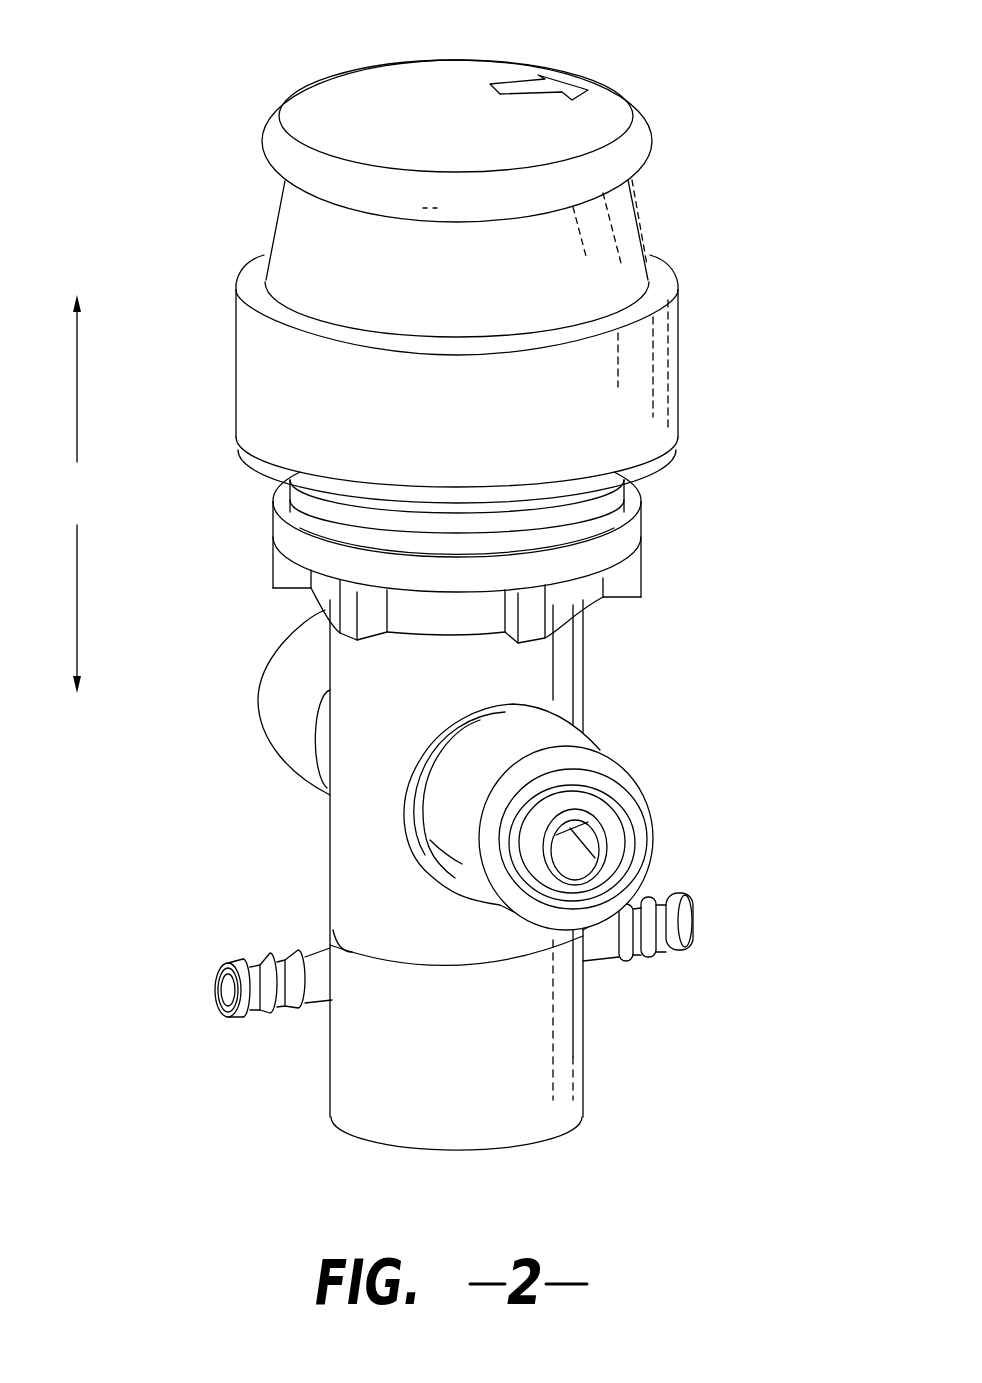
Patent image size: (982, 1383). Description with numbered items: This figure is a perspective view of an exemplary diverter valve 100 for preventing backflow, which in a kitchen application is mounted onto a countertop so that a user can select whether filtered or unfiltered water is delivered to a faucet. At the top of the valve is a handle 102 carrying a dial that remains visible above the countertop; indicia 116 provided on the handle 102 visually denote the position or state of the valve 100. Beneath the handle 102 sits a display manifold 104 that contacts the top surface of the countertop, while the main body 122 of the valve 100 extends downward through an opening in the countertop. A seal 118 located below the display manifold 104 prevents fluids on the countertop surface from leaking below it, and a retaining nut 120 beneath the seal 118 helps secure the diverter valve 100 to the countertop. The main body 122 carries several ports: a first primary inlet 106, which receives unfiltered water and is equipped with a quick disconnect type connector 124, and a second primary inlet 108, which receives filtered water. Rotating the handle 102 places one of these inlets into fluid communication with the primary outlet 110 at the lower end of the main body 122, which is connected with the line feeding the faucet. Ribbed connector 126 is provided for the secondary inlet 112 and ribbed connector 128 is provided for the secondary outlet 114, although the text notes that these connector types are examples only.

The diverter valve 100 is at (429, 621).
The handle 102 is at (358, 90).
The display manifold 104 is at (245, 332).
The first primary inlet 106 is at (564, 817).
The second primary inlet 108 is at (240, 661).
The primary outlet 110 is at (468, 1170).
The secondary inlet 112 is at (683, 927).
The secondary outlet 114 is at (233, 1005).
The indicia 116 is at (555, 82).
The seal 118 is at (300, 488).
The retaining nut 120 is at (282, 535).
The main body 122 is at (350, 847).
The quick disconnect type connector 124 is at (602, 802).
The ribbed connector 126 is at (653, 974).
The ribbed connector 128 is at (271, 1022).